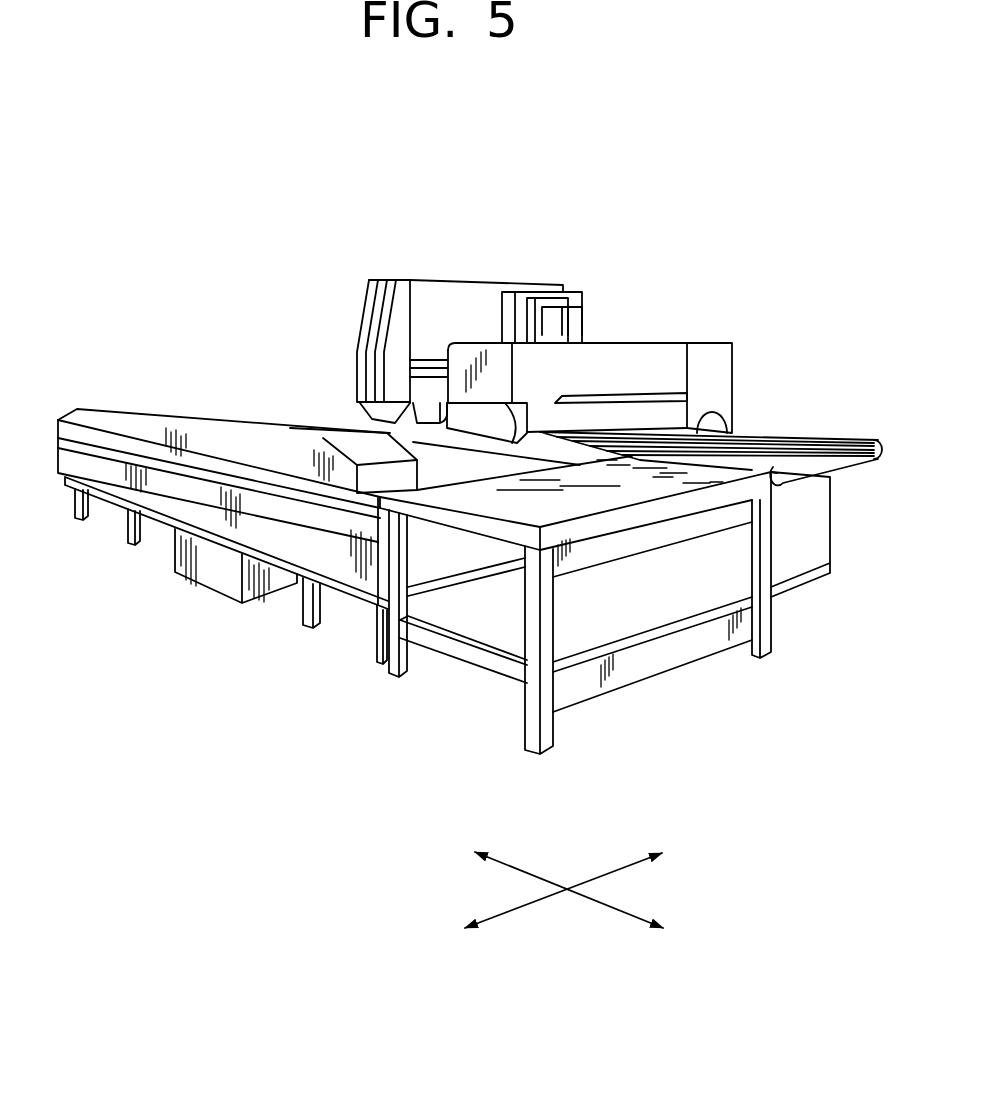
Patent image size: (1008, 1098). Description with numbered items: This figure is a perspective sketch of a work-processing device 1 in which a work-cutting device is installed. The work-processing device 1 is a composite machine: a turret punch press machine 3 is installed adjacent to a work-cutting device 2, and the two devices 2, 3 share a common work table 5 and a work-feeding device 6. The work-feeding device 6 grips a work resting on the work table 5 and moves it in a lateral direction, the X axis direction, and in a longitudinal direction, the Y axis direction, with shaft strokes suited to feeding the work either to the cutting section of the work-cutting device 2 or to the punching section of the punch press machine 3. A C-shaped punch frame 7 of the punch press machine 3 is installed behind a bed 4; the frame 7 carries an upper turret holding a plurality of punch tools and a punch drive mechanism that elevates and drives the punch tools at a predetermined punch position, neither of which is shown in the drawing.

The work-processing device 1 is at (272, 350).
The work-cutting device 2 is at (643, 327).
The turret punch press machine 3 is at (481, 268).
The bed 4 is at (222, 581).
The work table 5 is at (442, 457).
The work-feeding device 6 is at (202, 416).
The C-shaped punch frame 7 is at (423, 307).